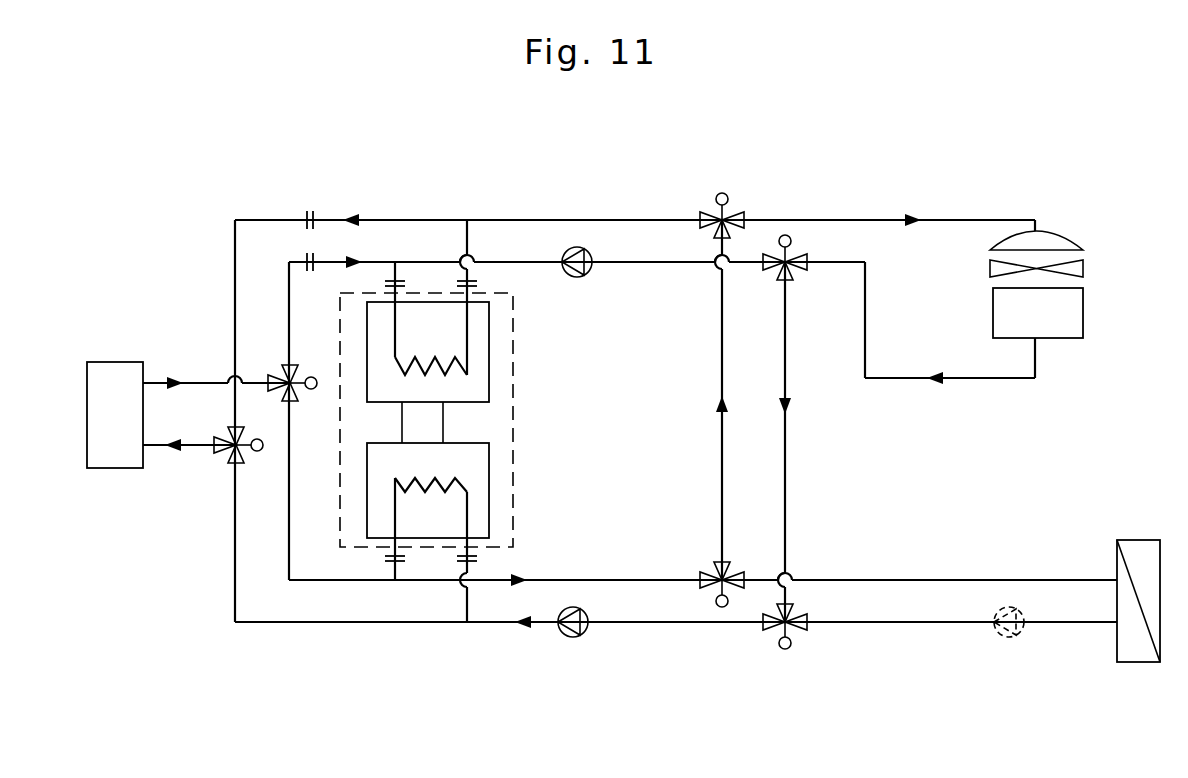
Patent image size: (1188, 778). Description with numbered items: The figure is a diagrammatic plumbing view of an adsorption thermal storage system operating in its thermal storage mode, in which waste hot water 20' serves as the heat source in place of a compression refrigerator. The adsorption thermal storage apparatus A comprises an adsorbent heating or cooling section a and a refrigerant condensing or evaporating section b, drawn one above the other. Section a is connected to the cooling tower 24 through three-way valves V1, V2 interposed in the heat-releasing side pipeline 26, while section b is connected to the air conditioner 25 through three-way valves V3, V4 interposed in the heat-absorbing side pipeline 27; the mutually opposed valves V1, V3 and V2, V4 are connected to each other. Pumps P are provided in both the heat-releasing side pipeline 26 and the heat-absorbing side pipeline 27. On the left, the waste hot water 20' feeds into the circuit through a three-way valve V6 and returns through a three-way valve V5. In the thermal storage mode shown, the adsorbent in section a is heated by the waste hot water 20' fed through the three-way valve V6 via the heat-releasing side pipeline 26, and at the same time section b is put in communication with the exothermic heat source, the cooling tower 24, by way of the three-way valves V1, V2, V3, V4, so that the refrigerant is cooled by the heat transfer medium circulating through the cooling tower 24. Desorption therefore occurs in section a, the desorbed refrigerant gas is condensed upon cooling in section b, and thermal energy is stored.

The waste hot water 20' is at (115, 373).
The cooling tower 24 is at (1090, 282).
The air conditioner 25 is at (1129, 540).
The heat-releasing side pipeline 26 is at (413, 220).
The heat-absorbing side pipeline 27 is at (656, 622).
The adsorbent heating or cooling section a is at (489, 345).
The refrigerant condensing or evaporating section b is at (489, 493).
The adsorption thermal storage apparatus A is at (513, 417).
The three-way valve V1 is at (736, 208).
The three-way valve V2 is at (799, 253).
The three-way valve V3 is at (734, 573).
The three-way valve V4 is at (800, 620).
The three-way valve V5 is at (245, 461).
The three-way valve V6 is at (298, 371).
The pump P is at (791, 457).